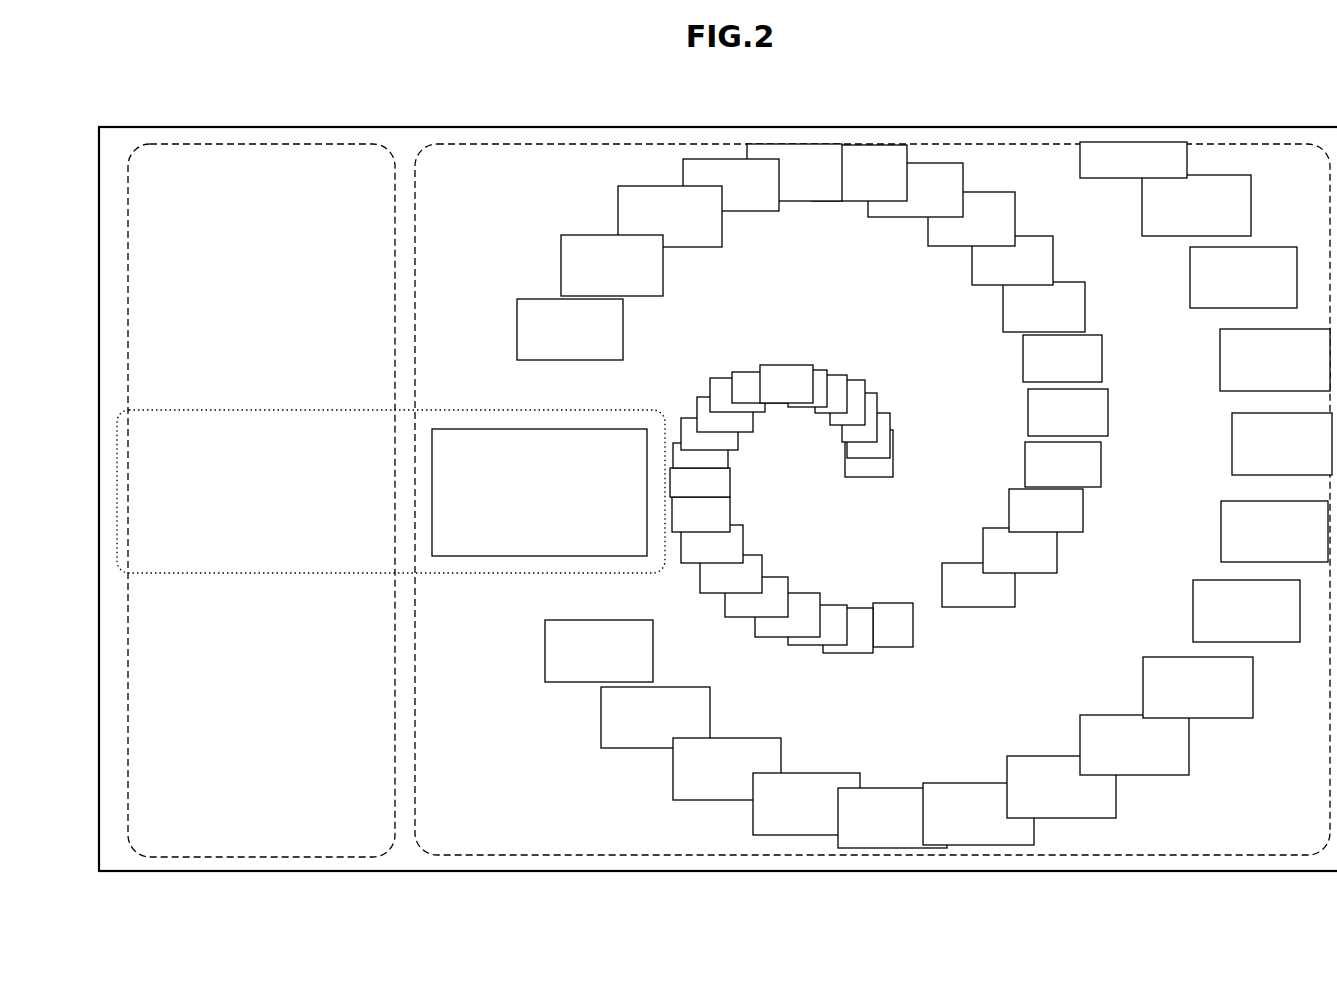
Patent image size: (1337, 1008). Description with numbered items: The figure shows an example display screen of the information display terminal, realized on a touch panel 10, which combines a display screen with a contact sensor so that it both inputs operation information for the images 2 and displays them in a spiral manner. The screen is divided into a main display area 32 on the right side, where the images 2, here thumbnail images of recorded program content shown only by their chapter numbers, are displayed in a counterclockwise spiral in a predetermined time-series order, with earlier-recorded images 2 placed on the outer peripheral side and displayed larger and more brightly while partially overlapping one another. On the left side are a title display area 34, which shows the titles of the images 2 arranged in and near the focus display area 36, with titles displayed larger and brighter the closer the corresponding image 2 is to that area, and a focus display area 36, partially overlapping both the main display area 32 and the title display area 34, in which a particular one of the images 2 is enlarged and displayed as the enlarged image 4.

The touch panel 10 is at (836, 127).
The main display area 32 is at (1265, 140).
The title display area 34 is at (321, 144).
The focus display area 36 is at (172, 410).
The enlarged image 4 is at (476, 428).
The image 2 is at (538, 298).